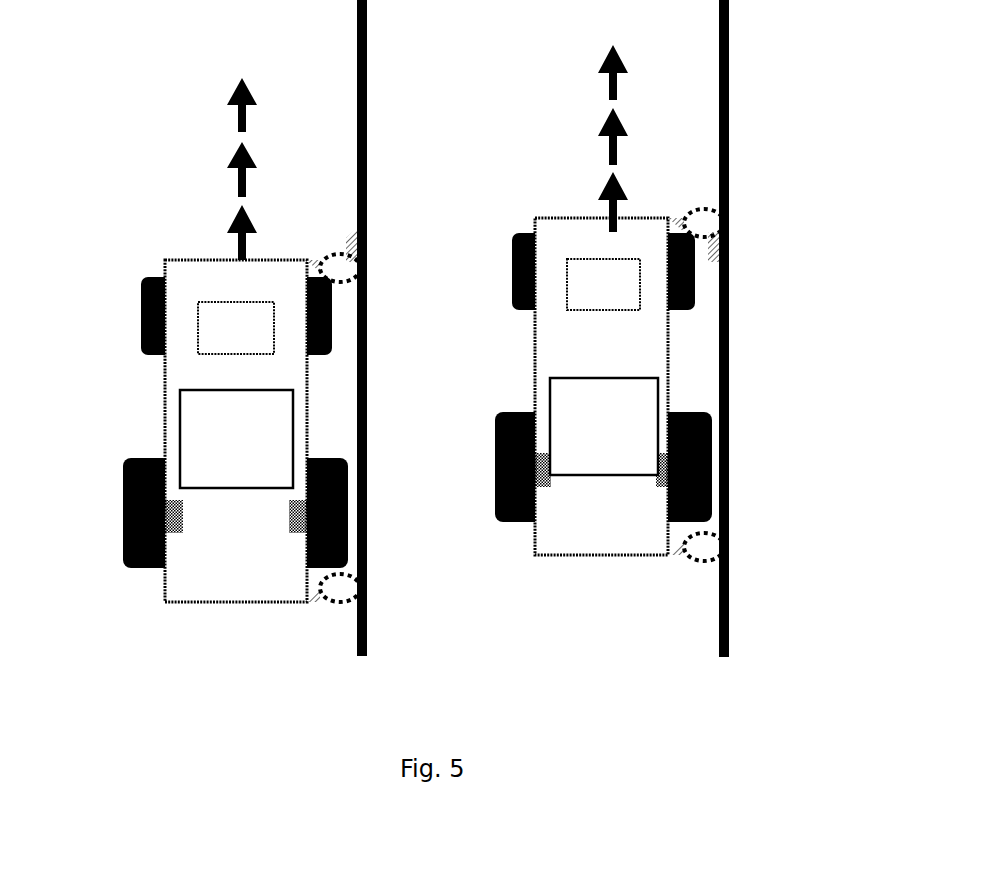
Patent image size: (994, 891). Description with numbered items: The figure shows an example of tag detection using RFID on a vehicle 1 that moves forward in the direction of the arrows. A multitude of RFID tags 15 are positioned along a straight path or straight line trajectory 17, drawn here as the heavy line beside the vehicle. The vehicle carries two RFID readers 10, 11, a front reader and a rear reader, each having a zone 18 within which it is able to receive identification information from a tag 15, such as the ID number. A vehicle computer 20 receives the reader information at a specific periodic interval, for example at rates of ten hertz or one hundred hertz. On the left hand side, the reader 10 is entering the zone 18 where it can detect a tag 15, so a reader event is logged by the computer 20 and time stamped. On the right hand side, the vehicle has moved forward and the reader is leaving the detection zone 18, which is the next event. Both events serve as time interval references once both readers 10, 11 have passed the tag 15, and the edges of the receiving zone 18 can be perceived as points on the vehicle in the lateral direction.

The vehicle 1 is at (127, 372).
The RFID reader 10 is at (318, 268).
The RFID reader 11 is at (313, 600).
The RFID tag 15 is at (367, 270).
The straight line trajectory 17 is at (365, 603).
The zone 18 is at (340, 254).
The vehicle computer 20 is at (180, 421).